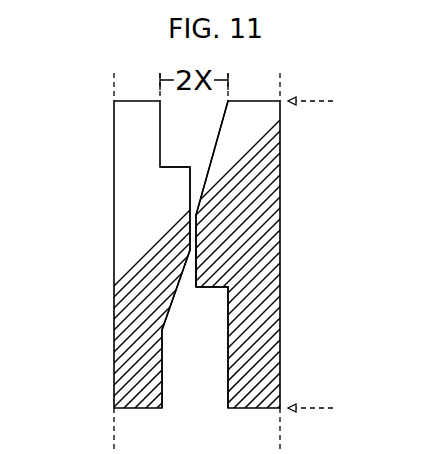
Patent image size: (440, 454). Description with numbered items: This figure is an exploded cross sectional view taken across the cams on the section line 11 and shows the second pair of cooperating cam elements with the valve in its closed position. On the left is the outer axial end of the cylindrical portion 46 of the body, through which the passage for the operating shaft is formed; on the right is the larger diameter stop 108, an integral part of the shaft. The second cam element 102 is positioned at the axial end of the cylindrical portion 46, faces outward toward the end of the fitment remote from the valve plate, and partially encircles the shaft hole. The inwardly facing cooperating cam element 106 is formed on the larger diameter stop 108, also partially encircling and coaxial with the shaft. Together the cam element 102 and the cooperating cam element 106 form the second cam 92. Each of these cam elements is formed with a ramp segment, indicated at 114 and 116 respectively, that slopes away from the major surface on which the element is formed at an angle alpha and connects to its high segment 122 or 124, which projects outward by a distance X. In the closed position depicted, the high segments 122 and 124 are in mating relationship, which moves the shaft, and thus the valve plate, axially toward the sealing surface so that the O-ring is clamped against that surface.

The section line 11 is at (323, 252).
The cylindrical portion 46 is at (125, 138).
The second cam 92 is at (193, 262).
The second cam element 102 is at (190, 250).
The cooperating cam element 106 is at (196, 207).
The larger diameter stop 108 is at (257, 131).
The ramp segment 114 is at (176, 291).
The ramp segment 116 is at (212, 159).
The high segment 122 is at (190, 208).
The high segment 124 is at (196, 261).